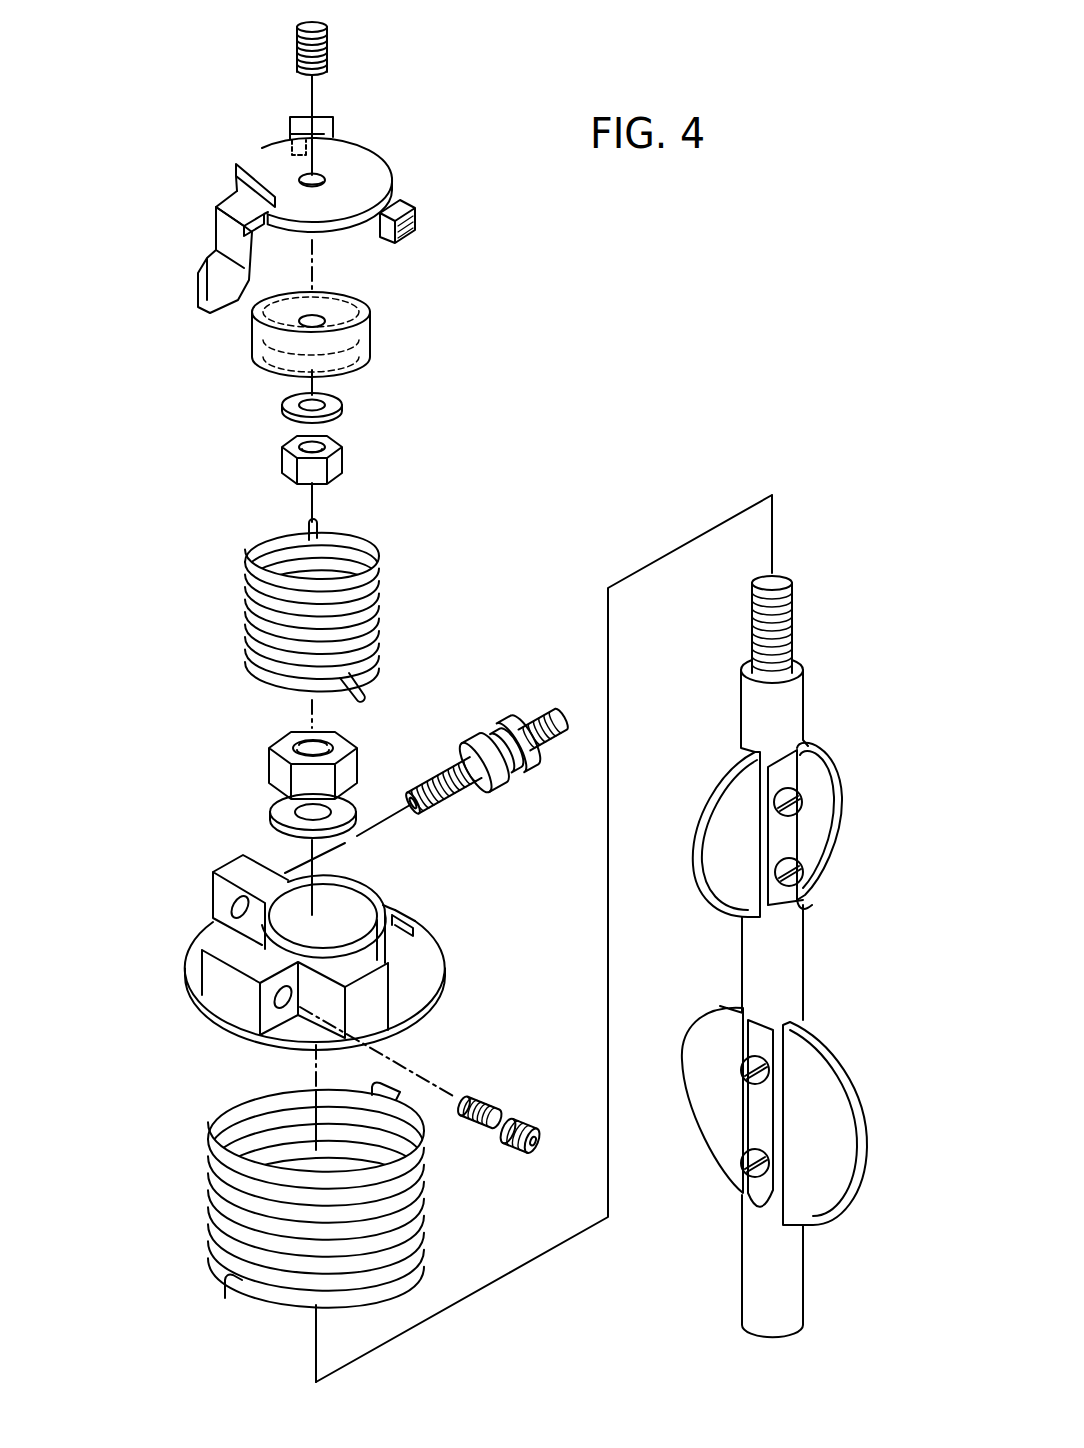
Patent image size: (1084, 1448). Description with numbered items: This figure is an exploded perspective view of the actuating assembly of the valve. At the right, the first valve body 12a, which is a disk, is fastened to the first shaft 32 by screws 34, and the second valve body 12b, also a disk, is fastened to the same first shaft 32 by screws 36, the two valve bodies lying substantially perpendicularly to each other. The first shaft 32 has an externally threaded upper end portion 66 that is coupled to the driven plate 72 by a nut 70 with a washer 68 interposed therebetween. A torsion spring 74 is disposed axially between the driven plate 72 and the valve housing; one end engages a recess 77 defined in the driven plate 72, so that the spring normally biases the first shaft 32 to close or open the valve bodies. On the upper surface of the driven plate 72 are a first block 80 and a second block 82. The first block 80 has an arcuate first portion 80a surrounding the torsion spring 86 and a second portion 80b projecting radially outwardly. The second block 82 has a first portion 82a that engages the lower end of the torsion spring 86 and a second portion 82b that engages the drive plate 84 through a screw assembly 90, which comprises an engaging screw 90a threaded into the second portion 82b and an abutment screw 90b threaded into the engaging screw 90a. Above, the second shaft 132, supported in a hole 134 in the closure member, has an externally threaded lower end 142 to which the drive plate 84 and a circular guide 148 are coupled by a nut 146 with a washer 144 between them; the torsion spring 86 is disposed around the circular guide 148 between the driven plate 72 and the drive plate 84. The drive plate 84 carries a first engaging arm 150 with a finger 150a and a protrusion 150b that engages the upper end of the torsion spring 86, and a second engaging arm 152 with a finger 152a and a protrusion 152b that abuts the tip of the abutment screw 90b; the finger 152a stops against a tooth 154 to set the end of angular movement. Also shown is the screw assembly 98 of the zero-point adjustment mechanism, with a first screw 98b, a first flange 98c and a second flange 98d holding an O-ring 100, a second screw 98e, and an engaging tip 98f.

The second shaft 132 is at (346, 46).
The externally threaded lower end 142 is at (322, 66).
The first engaging arm 150 is at (230, 120).
The finger 150a is at (292, 118).
The protrusion 150b is at (290, 134).
The hole 134 is at (318, 177).
The drive plate 84 is at (284, 199).
The second engaging arm 152 is at (178, 233).
The finger 152a is at (236, 200).
The protrusion 152b is at (208, 275).
The tooth 154 is at (412, 205).
The circular guide 148 is at (355, 305).
The washer 144 is at (341, 407).
The nut 146 is at (342, 462).
The torsion spring 86 is at (379, 575).
The nut 70 is at (270, 752).
The washer 68 is at (280, 812).
The screw assembly 98 is at (499, 759).
The first screw 98b is at (544, 729).
The first flange 98c is at (521, 741).
The second flange 98d is at (484, 762).
The second screw 98e is at (443, 786).
The engaging tip 98f is at (412, 803).
The O-ring 100 is at (509, 749).
The driven plate 72 is at (300, 977).
The recess 77 is at (403, 926).
The first block 80 is at (191, 902).
The first portion 80a is at (267, 906).
The second portion 80b is at (232, 892).
The second block 82 is at (260, 1025).
The first portion 82a is at (320, 1032).
The second portion 82b is at (278, 1022).
The screw assembly 90 is at (528, 1091).
The engaging screw 90a is at (535, 1126).
The abutment screw 90b is at (490, 1106).
The torsion spring 74 is at (417, 1208).
The externally threaded upper end portion 66 is at (792, 628).
The first shaft 32 is at (782, 956).
The second valve body 12b is at (804, 827).
The screws 36 is at (800, 880).
The first valve body 12a is at (782, 1115).
The screws 34 is at (745, 1170).